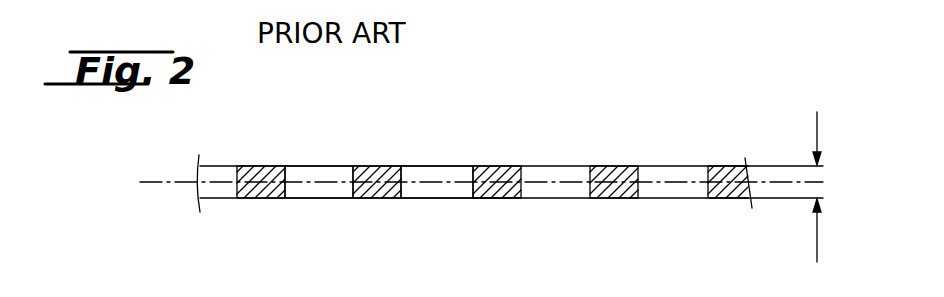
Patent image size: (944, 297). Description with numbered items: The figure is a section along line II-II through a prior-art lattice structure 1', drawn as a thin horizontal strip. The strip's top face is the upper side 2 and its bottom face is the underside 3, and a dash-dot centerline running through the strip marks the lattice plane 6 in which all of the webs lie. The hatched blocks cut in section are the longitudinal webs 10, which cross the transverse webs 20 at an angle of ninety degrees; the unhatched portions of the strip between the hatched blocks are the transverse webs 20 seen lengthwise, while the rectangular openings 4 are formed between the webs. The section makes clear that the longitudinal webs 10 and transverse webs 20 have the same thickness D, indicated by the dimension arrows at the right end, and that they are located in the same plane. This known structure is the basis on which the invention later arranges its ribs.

The lattice structure 1' is at (474, 153).
The upper side 2 is at (497, 165).
The underside 3 is at (497, 198).
The openings 4 is at (325, 173).
The lattice plane 6 is at (152, 182).
The longitudinal webs 10 is at (265, 165).
The transverse webs 20 is at (305, 189).
The thickness D is at (832, 187).